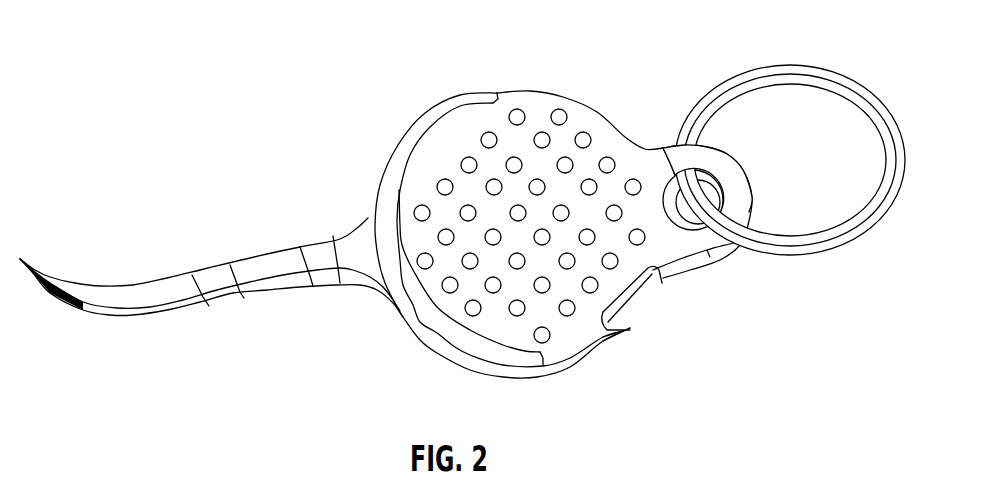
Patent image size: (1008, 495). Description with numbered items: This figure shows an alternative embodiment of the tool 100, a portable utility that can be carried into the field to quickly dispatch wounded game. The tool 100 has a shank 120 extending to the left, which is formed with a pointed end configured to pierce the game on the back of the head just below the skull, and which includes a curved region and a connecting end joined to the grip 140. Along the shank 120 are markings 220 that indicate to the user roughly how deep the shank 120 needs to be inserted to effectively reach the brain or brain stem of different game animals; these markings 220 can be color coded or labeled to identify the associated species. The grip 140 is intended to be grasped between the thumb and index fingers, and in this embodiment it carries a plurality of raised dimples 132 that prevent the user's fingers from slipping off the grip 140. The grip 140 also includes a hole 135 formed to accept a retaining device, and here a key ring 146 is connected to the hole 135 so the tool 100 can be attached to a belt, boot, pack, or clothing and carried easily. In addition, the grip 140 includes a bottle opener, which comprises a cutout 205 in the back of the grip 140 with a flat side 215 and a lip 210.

The tool 100 is at (162, 63).
The shank 120 is at (178, 248).
The raised dimples 132 is at (557, 110).
The hole 135 is at (663, 147).
The grip 140 is at (377, 100).
The key ring 146 is at (843, 72).
The cutout 205 is at (640, 313).
The lip 210 is at (618, 338).
The flat side 215 is at (662, 278).
The markings 220 is at (207, 302).